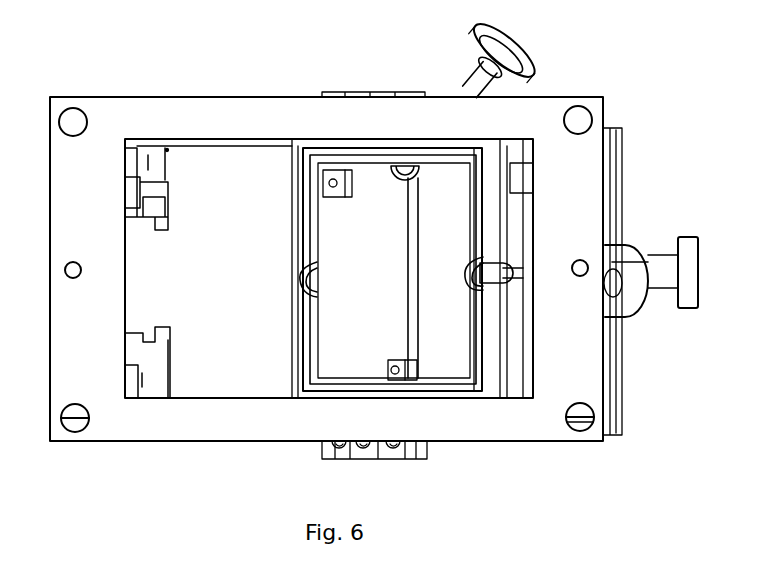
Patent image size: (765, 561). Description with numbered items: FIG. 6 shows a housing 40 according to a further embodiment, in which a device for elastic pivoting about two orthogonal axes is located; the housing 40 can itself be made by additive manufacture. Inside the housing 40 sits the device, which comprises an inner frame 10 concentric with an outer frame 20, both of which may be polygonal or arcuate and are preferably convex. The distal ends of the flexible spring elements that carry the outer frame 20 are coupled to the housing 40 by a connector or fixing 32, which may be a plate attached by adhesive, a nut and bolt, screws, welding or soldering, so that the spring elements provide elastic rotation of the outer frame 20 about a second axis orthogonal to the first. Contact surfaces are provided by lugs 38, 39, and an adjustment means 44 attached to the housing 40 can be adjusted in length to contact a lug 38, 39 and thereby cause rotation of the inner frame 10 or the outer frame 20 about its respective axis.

The inner frame 10 is at (470, 348).
The outer frame 20 is at (477, 378).
The connector or fixing 32 is at (400, 372).
The lug 38 is at (487, 257).
The lug 39 is at (400, 172).
The housing 40 is at (584, 95).
The adjustment means 44 is at (527, 253).